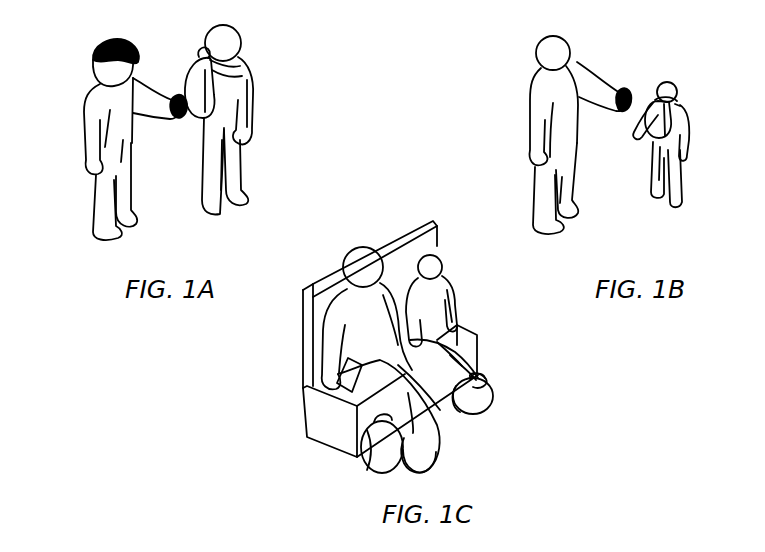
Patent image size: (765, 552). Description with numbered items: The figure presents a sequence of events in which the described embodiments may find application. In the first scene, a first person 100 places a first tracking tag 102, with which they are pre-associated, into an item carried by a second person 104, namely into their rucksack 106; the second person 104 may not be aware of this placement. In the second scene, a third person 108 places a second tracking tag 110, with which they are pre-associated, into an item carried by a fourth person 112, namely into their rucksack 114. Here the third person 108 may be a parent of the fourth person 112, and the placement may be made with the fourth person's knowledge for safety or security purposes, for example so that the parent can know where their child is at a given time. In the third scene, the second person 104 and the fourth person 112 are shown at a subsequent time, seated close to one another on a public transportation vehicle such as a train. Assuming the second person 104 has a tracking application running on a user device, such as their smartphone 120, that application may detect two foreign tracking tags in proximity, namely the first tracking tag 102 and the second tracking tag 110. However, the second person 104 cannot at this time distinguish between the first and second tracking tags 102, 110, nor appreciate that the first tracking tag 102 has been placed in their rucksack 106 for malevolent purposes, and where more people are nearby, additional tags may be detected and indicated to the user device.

In FIG. 1A, the first person 100 is at (84, 100).
In FIG. 1A, the first tracking tag 102 is at (173, 100).
In FIG. 1A, the second person 104 is at (253, 90).
In FIG. 1C, the second person 104 is at (333, 302).
In FIG. 1A, the rucksack 106 is at (192, 72).
In FIG. 1C, the rucksack 106 is at (372, 466).
In FIG. 1B, the third person 108 is at (528, 103).
In FIG. 1B, the second tracking tag 110 is at (618, 91).
In FIG. 1B, the fourth person 112 is at (688, 144).
In FIG. 1C, the fourth person 112 is at (452, 277).
In FIG. 1B, the rucksack 114 is at (690, 112).
In FIG. 1C, the rucksack 114 is at (488, 400).
In FIG. 1C, the smartphone 120 is at (309, 387).